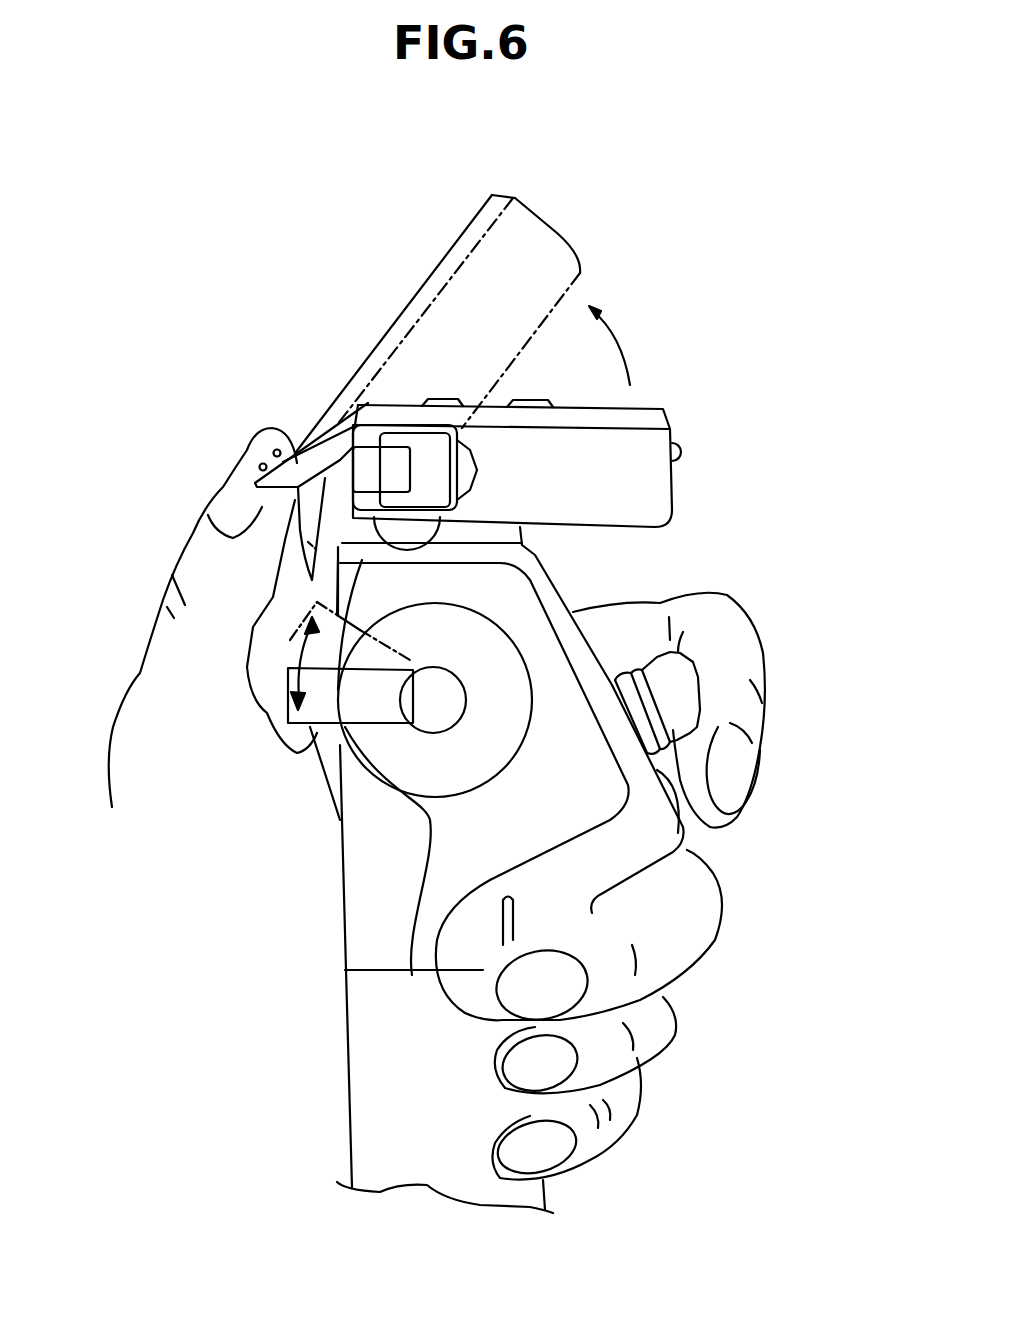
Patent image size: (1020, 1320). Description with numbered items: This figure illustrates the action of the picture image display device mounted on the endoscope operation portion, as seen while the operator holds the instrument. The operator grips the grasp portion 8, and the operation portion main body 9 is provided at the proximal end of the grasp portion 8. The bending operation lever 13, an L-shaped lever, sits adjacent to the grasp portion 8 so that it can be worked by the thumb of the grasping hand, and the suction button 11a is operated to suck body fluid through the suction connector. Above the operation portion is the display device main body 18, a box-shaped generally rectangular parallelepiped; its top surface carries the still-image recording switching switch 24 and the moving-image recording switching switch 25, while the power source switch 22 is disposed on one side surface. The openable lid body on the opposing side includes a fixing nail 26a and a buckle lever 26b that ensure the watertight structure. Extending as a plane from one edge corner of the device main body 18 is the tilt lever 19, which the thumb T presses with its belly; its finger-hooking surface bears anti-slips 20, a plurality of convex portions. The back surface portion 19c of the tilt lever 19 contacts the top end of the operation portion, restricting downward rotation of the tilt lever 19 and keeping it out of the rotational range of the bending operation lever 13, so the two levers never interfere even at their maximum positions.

The grasp portion 8 is at (345, 1108).
The operation portion main body 9 is at (340, 887).
The suction button 11a is at (688, 688).
The bending operation lever 13 is at (342, 705).
The display device main body 18 is at (648, 490).
The tilt angle varying lever 19 is at (303, 445).
The back surface portion 19c is at (366, 480).
The anti-slips 20 is at (253, 454).
The power source switch 22 is at (682, 456).
The still-image recording switching switch 24 is at (540, 400).
The moving-image recording switching switch 25 is at (445, 399).
The fixing nail 26a is at (370, 478).
The buckle lever 26b is at (338, 565).
The thumb T is at (173, 563).